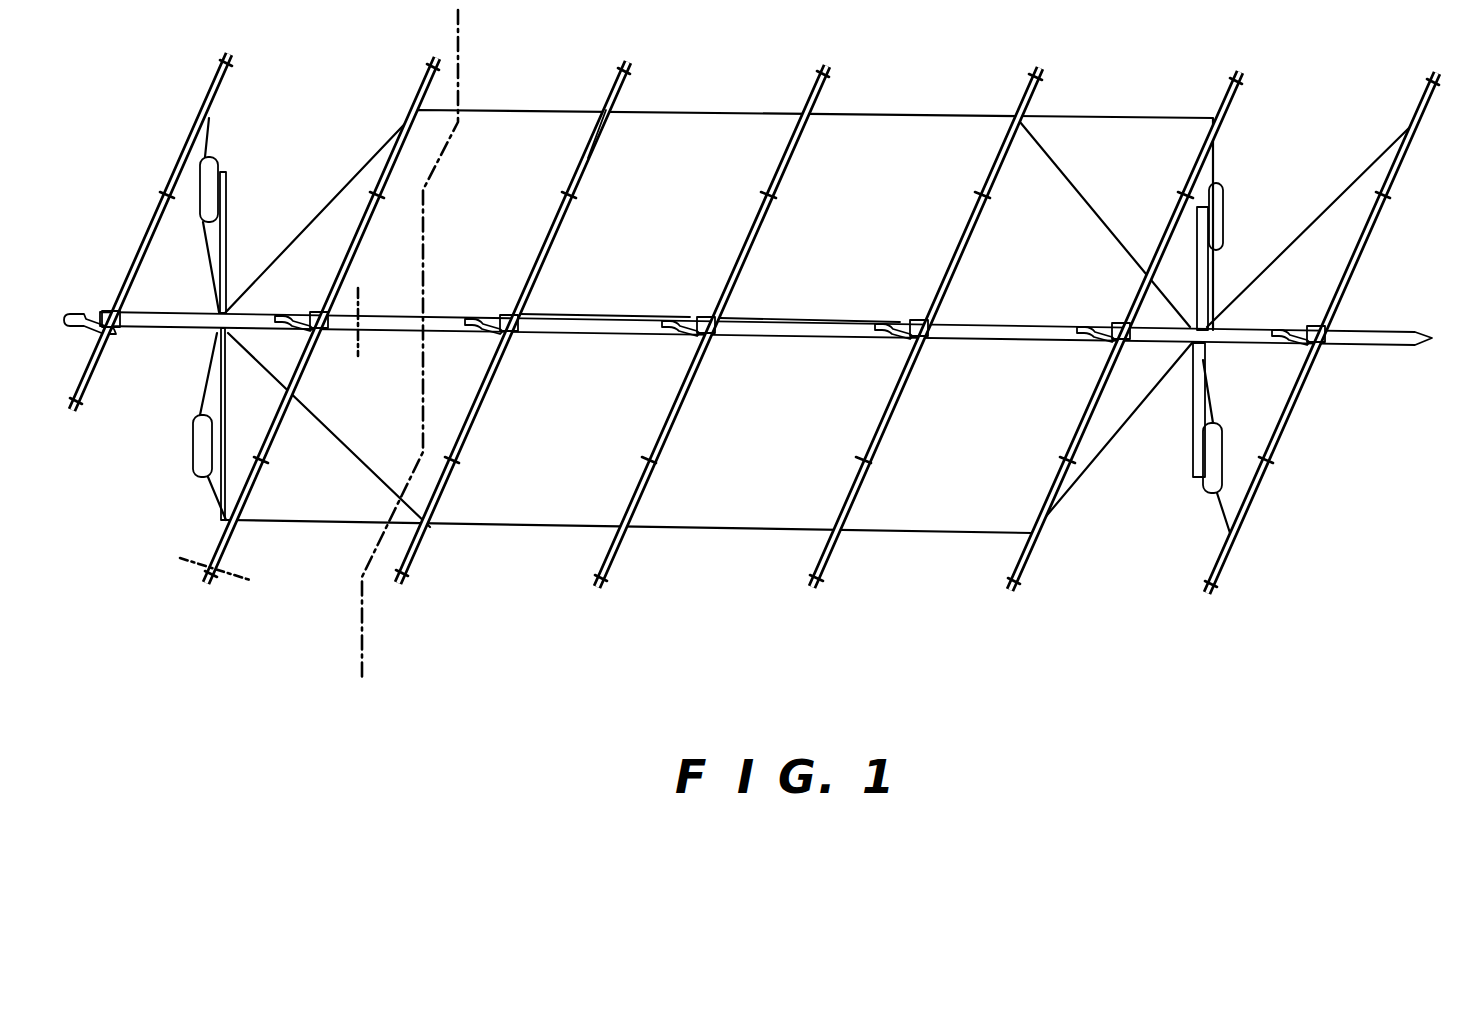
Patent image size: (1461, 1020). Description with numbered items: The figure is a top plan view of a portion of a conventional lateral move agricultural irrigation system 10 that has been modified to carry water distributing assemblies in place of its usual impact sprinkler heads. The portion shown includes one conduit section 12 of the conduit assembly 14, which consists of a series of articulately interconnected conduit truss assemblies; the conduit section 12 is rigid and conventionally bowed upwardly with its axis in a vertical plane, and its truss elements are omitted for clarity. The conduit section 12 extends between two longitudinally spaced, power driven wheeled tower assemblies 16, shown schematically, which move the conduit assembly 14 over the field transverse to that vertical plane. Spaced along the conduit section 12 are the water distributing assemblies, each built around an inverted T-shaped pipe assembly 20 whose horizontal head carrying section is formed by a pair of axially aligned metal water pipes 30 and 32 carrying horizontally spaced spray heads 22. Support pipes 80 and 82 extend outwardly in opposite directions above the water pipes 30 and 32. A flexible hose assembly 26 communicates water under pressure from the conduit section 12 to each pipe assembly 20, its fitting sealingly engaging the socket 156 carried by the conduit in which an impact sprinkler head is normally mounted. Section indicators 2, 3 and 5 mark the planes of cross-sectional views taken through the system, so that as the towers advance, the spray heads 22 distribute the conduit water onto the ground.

The lateral move agricultural irrigation system 10 is at (828, 308).
The conduit section 12 is at (572, 330).
The conduit assembly 14 is at (650, 275).
The wheeled tower assembly 16 is at (236, 174).
The inverted T-shaped pipe assembly 20 is at (123, 270).
The spray head 22 is at (425, 65).
The flexible hose assembly 26 is at (316, 310).
The water pipe 30 is at (240, 520).
The water pipe 32 is at (625, 90).
The support pipe 80 is at (300, 396).
The support pipe 82 is at (583, 159).
The socket 156 is at (487, 335).
The section line 2- 2 is at (414, 28).
The section line 3- 3 is at (340, 300).
The section line 5- 5 is at (190, 559).